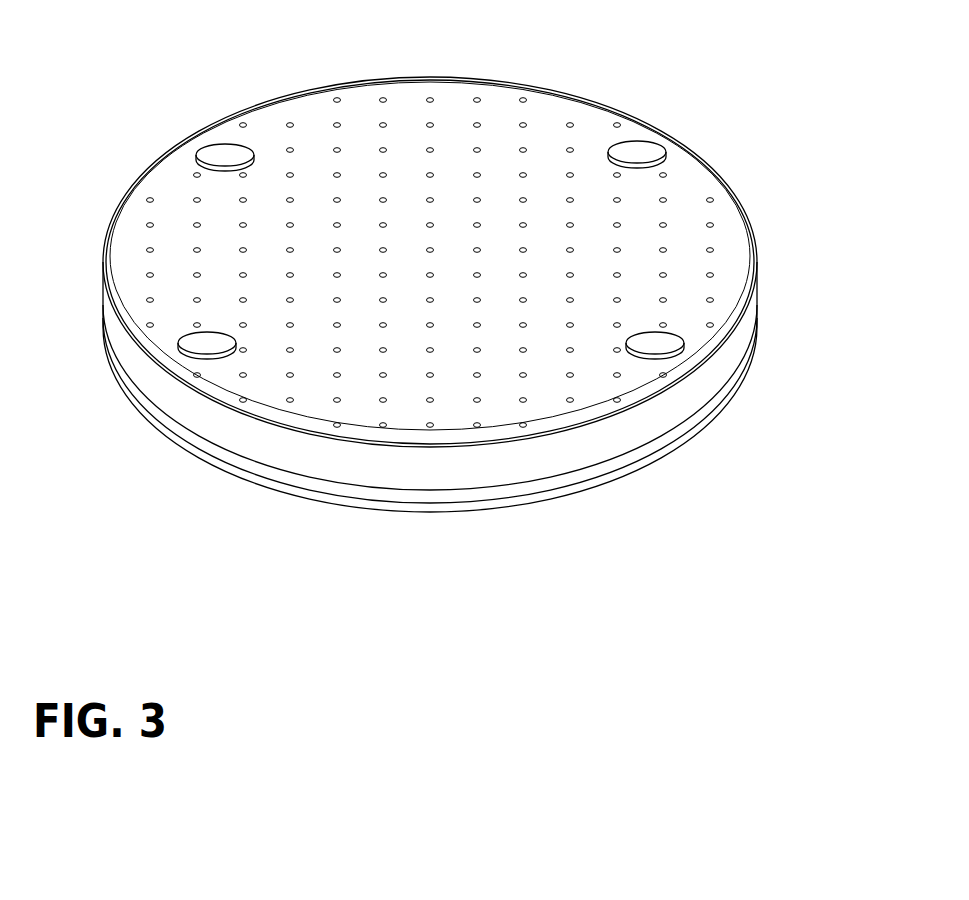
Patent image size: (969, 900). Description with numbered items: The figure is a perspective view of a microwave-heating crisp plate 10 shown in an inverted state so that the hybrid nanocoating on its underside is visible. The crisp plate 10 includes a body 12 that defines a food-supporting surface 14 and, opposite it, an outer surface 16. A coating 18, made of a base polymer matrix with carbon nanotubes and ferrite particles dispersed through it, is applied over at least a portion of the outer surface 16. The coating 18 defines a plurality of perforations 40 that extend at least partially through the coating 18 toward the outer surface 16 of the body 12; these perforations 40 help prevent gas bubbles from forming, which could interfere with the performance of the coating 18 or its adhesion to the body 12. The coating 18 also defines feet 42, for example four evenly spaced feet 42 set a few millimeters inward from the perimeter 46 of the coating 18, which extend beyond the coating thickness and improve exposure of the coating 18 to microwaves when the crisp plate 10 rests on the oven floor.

The microwave-heating crisp plate 10 is at (460, 328).
The body 12 is at (378, 463).
The food-supporting surface 14 is at (443, 448).
The outer surface 16 is at (722, 339).
The coating 18 is at (750, 227).
The perforations 40 is at (290, 300).
The feet 42 is at (226, 151).
The perimeter 46 is at (430, 305).